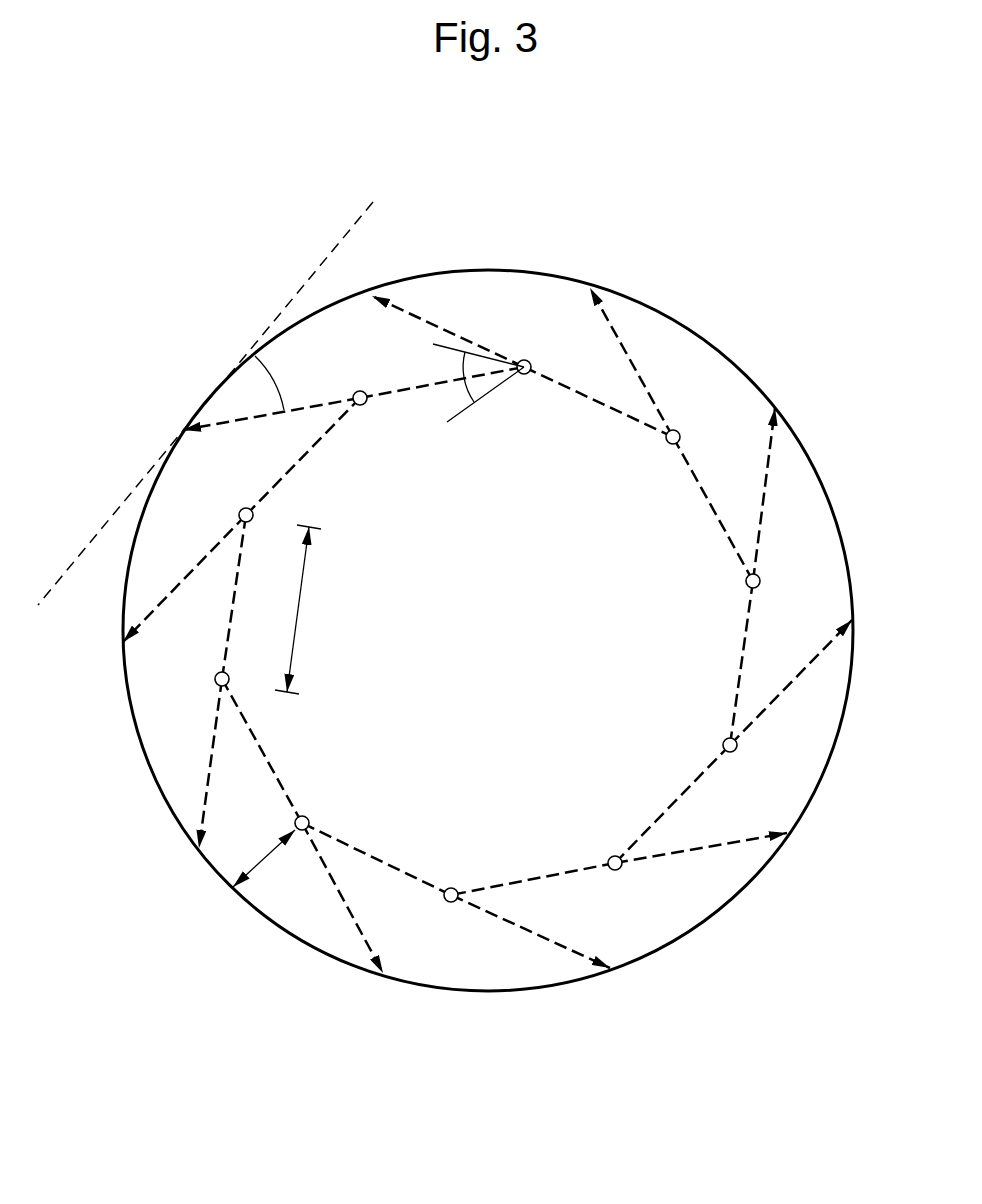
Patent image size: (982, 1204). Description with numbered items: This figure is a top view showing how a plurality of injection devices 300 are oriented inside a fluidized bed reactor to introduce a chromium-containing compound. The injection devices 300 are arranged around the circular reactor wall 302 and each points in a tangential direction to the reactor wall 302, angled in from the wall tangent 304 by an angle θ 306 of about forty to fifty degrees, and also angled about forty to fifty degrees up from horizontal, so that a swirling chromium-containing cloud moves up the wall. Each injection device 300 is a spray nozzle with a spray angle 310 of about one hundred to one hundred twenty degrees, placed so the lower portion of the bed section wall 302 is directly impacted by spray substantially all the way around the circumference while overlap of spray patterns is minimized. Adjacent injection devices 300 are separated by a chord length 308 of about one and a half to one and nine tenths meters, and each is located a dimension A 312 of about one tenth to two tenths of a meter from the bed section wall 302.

The injection devices 300 is at (524, 374).
The reactor wall 302 is at (743, 368).
The wall tangent 304 is at (300, 288).
The angle θ 306 is at (280, 378).
The chord length 308 is at (300, 608).
The spray angle 310 is at (462, 398).
The dimension A 312 is at (270, 853).